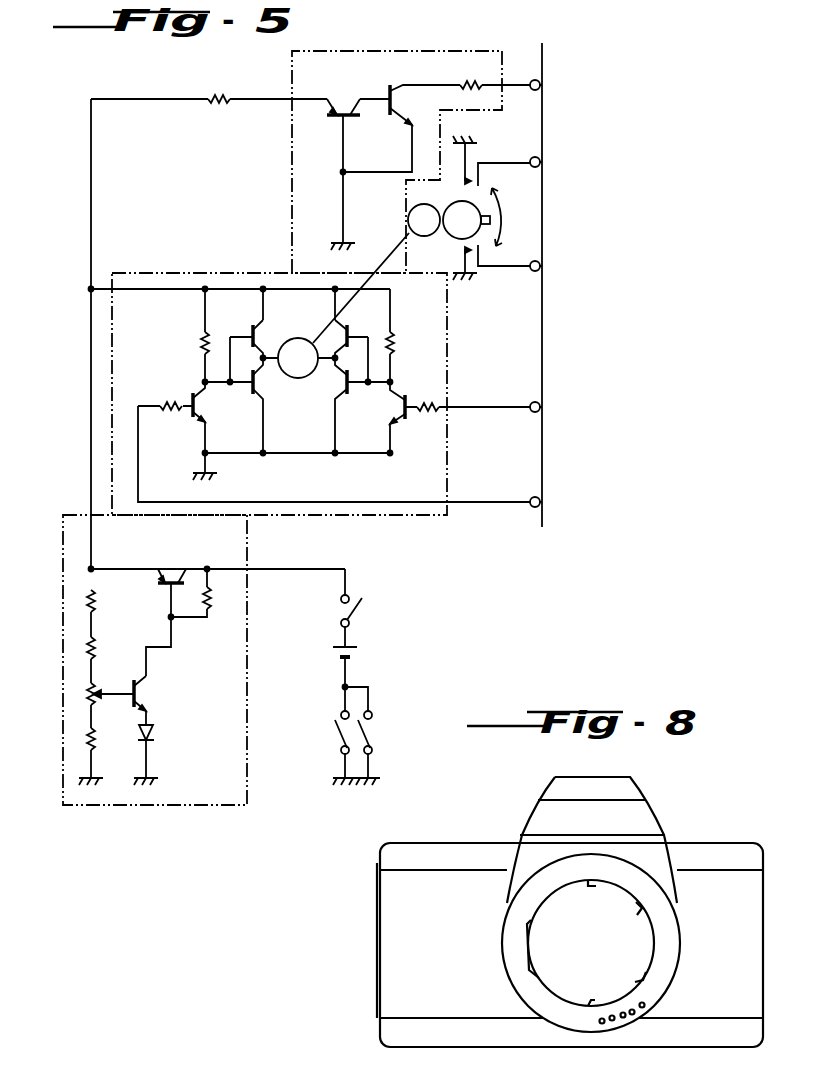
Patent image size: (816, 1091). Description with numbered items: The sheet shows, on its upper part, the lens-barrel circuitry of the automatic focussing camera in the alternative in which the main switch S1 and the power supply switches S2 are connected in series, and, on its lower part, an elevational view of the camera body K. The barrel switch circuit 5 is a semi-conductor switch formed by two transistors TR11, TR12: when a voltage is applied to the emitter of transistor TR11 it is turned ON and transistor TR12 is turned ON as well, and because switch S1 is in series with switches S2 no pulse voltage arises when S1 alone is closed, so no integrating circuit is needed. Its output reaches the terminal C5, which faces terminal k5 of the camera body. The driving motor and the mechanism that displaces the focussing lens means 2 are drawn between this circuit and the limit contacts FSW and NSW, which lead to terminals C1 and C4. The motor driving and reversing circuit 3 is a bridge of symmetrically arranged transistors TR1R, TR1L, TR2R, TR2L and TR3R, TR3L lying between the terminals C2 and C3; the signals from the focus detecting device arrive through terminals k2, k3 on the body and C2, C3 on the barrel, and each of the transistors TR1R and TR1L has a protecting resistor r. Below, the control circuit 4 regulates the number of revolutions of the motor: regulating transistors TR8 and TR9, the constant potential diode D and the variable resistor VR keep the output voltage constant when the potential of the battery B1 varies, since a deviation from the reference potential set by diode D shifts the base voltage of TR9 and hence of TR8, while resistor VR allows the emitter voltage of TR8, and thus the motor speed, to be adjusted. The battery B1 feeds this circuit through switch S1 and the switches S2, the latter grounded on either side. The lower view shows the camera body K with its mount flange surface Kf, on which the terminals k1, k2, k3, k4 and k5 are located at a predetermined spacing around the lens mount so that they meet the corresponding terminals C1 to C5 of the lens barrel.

In FIG. 5, the barrel switch circuit 5 is at (377, 70).
In FIG. 5, the motor driving and reversing circuit 3 is at (125, 325).
In FIG. 5, the control circuit of the number of revolution of the motor 4 is at (73, 548).
In FIG. 5, the focussing lens means 2 is at (453, 240).
In FIG. 5, the transistor TR11 is at (343, 104).
In FIG. 5, the transistor TR12 is at (391, 86).
In FIG. 5, the transistor TR1L is at (191, 397).
In FIG. 5, the transistor TR2L is at (252, 327).
In FIG. 5, the transistor TR3L is at (262, 385).
In FIG. 5, the transistor TR1R is at (407, 422).
In FIG. 5, the transistor TR2R is at (345, 328).
In FIG. 5, the transistor TR3R is at (349, 397).
In FIG. 5, the regulating transistor TR8 is at (173, 578).
In FIG. 5, the regulating transistor TR9 is at (140, 692).
In FIG. 5, the protecting resistor r is at (173, 416).
In FIG. 5, the variable resistor VR is at (88, 690).
In FIG. 5, the constant potential diode D is at (157, 737).
In FIG. 5, the main switch S1 is at (342, 613).
In FIG. 5, the power supply switch S2 is at (336, 737).
In FIG. 5, the battery B1 is at (352, 658).
In FIG. 5, the far-end switch FSW is at (491, 161).
In FIG. 5, the near-end switch NSW is at (491, 261).
In FIG. 5, the terminal C1 is at (555, 164).
In FIG. 5, the terminal C2 is at (555, 409).
In FIG. 5, the terminal C3 is at (555, 504).
In FIG. 5, the terminal C4 is at (555, 268).
In FIG. 5, the terminal C5 is at (555, 88).
In FIG. 8, the camera body K is at (687, 860).
In FIG. 8, the mount flange surface Kf is at (553, 1012).
In FIG. 8, the terminal k1 is at (642, 1008).
In FIG. 8, the terminal k2 is at (632, 1015).
In FIG. 8, the terminal k3 is at (623, 1018).
In FIG. 8, the terminal k4 is at (612, 1021).
In FIG. 8, the terminal k5 is at (602, 1024).